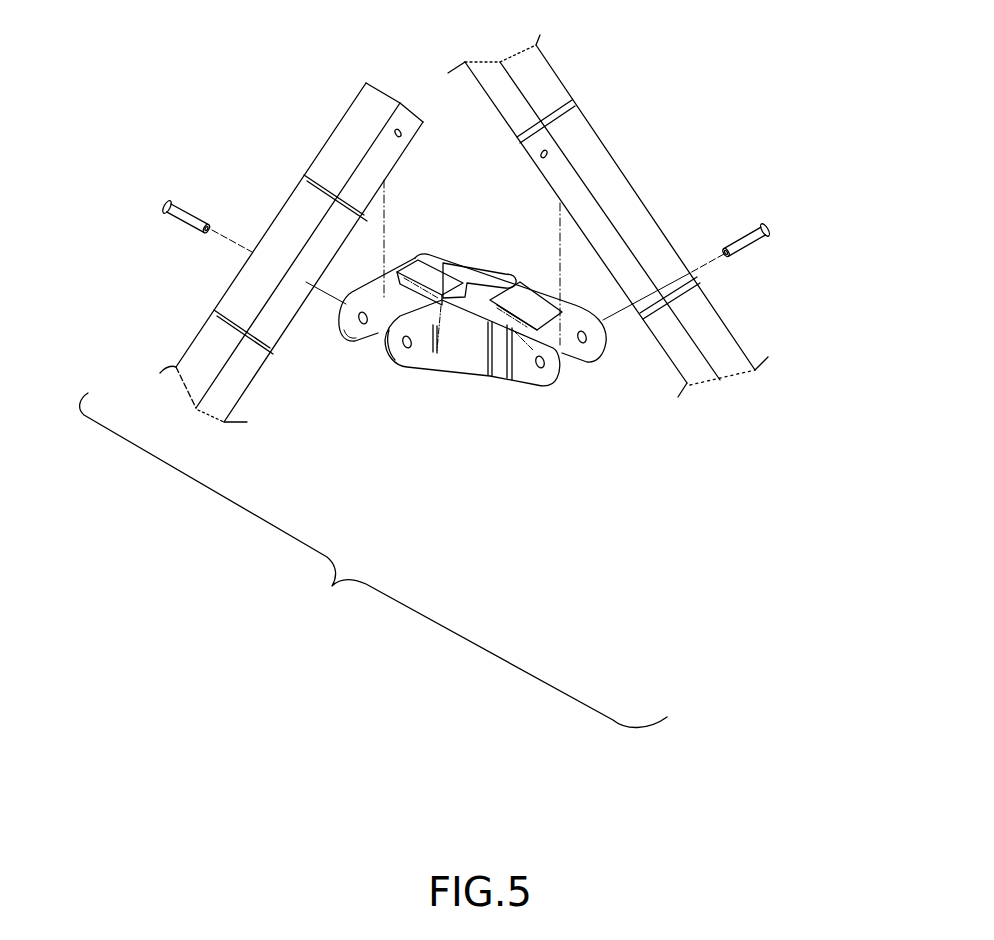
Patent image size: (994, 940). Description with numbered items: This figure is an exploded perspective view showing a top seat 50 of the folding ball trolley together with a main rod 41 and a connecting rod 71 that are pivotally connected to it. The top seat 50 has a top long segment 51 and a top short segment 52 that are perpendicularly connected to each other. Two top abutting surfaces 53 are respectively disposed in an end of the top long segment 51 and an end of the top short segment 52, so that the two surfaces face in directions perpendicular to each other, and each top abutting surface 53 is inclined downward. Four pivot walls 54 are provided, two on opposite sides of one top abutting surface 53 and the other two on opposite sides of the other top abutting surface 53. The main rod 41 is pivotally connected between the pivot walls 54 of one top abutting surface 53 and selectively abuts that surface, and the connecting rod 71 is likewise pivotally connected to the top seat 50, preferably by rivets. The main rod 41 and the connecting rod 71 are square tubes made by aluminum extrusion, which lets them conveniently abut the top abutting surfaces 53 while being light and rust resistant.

The main rod 41 is at (618, 184).
The connecting rod 71 is at (222, 306).
The top seat 50 is at (461, 380).
The top long segment 51 is at (585, 394).
The top short segment 52 is at (373, 366).
The top abutting surface 53 is at (425, 273).
The pivot wall 54 is at (531, 390).